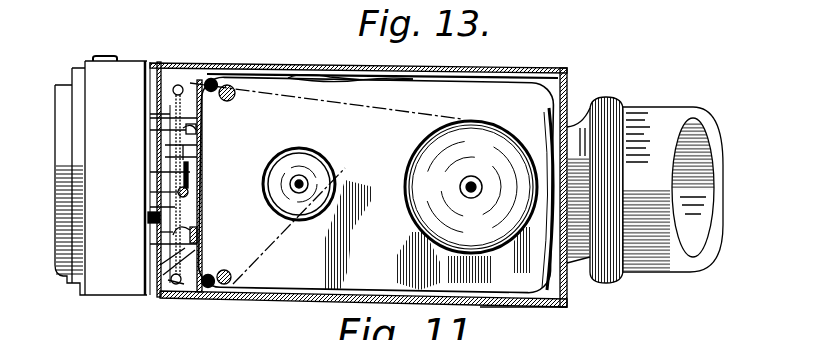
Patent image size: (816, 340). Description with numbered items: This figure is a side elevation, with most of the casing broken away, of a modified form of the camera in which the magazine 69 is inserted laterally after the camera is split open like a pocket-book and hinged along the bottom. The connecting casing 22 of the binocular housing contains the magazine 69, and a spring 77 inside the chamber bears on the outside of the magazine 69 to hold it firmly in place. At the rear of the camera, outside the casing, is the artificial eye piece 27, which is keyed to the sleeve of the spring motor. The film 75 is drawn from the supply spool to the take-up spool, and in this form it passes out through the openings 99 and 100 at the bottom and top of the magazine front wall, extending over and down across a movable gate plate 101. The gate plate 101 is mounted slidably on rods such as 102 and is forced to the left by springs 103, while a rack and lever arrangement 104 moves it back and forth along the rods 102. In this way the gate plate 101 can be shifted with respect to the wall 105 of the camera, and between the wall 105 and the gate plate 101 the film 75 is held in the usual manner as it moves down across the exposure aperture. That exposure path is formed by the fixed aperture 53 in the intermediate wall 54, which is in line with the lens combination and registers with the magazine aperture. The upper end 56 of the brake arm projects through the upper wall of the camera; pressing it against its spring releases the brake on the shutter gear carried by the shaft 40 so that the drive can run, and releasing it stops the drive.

The connecting casing 22 is at (494, 68).
The artificial eye piece 27 is at (626, 178).
The shaft 40 is at (146, 206).
The fixed aperture 53 is at (187, 157).
The intermediate wall 54 is at (147, 298).
The upper end of brake arm 56 is at (110, 57).
The magazine 69 is at (540, 306).
The film 75 is at (408, 168).
The spring 77 is at (300, 67).
The opening 99 is at (215, 100).
The opening 100 is at (232, 282).
The movable gate plate 101 is at (178, 147).
The rod 102 is at (190, 129).
The spring 103 is at (172, 119).
The rack and lever arrangement 104 is at (160, 190).
The wall 105 is at (168, 171).